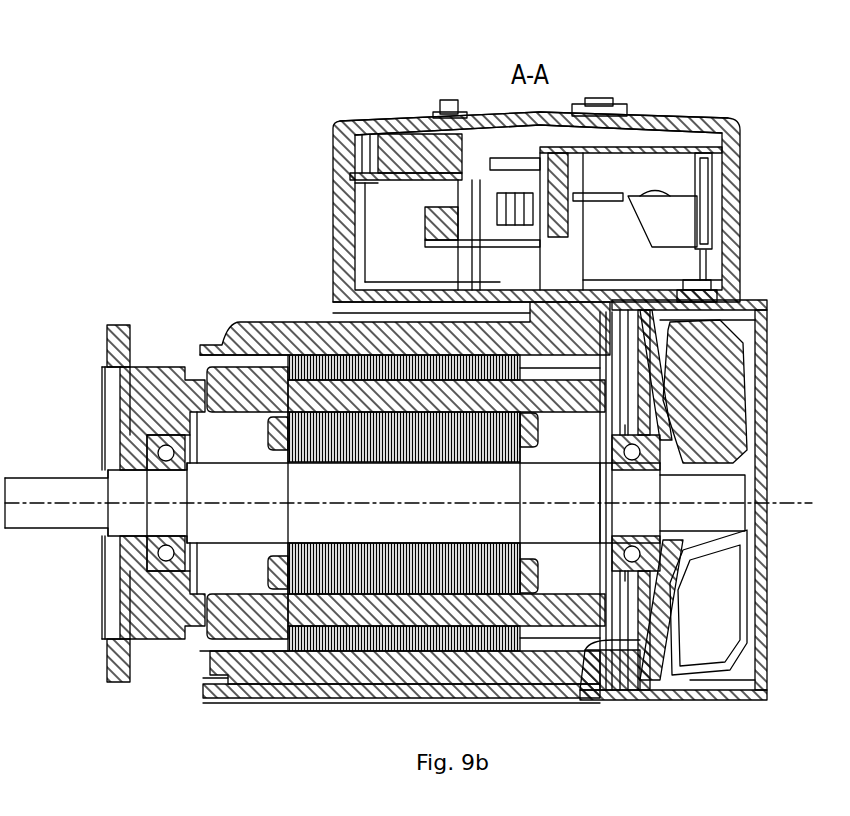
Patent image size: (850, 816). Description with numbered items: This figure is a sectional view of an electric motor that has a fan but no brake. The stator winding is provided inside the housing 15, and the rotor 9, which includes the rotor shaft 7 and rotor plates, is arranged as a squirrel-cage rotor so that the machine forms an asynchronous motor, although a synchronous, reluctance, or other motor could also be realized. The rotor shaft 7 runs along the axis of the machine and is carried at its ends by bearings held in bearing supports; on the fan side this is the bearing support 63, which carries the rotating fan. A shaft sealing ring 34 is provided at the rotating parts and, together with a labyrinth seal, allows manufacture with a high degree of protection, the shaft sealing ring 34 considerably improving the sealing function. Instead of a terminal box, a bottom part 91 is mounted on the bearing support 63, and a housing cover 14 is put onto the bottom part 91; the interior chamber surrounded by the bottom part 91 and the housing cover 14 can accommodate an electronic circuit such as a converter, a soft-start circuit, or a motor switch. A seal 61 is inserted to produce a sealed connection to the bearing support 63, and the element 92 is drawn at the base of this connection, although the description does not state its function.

The rotor shaft 7 is at (220, 492).
The rotor 9 is at (248, 613).
The housing cover 14 is at (410, 118).
The housing 15 is at (282, 340).
The shaft sealing ring 34 is at (693, 553).
The seal 61 is at (737, 297).
The bearing support 63 is at (638, 680).
The bottom part 91 is at (335, 237).
The connector 92 is at (693, 297).